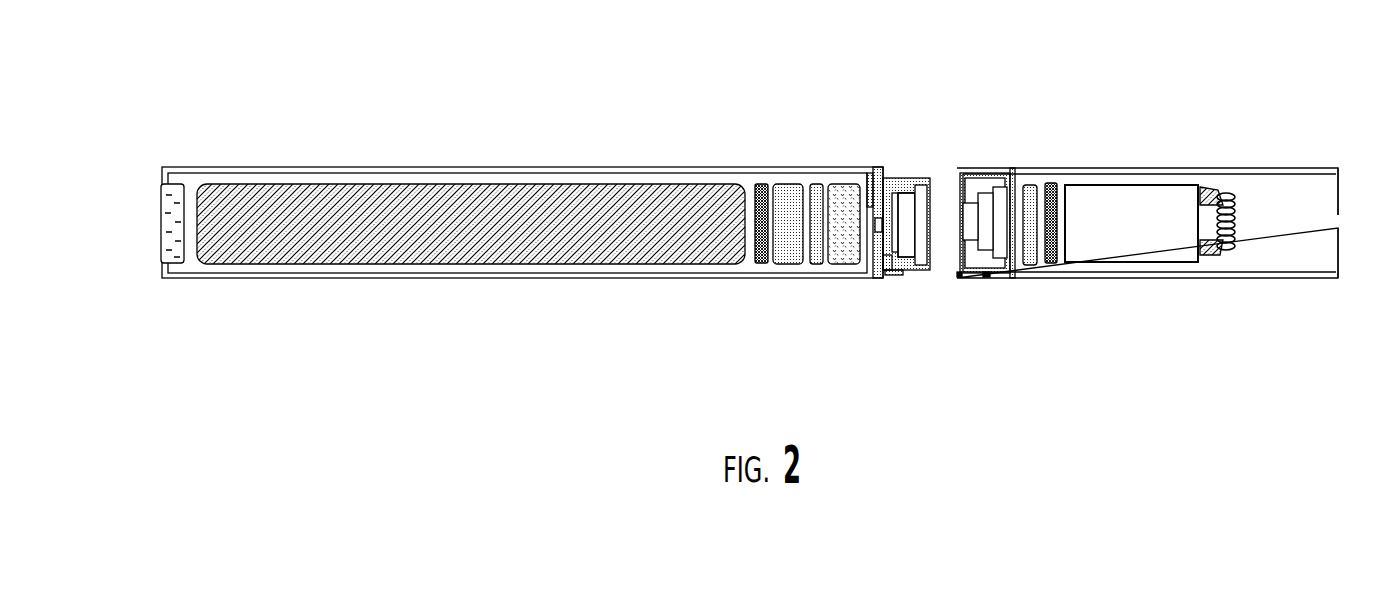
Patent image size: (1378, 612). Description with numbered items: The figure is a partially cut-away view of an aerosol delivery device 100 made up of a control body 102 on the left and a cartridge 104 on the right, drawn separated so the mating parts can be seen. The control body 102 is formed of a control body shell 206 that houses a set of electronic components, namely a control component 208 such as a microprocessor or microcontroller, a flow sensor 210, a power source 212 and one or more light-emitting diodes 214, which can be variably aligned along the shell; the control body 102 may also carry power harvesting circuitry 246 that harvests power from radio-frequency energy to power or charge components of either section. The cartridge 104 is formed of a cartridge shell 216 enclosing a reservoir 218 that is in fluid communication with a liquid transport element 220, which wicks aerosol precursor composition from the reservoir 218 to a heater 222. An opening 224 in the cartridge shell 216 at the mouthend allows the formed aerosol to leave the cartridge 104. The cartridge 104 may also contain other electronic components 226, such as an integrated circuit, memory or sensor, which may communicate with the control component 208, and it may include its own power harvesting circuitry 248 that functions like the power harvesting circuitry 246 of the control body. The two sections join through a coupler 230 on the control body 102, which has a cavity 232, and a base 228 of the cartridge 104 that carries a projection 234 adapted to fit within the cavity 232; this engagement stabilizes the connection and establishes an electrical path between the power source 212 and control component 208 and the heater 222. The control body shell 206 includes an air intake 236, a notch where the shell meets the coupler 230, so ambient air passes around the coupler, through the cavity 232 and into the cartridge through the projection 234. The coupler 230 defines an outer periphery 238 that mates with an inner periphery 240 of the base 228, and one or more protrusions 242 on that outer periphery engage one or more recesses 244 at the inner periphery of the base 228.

The aerosol delivery device 100 is at (245, 49).
The control body 102 is at (427, 121).
The cartridge 104 is at (1150, 124).
The control body shell 206 is at (297, 278).
The control component 208 is at (790, 264).
The flow sensor 210 is at (847, 264).
The power source 212 is at (445, 265).
The light-emitting diode 214 is at (173, 264).
The cartridge shell 216 is at (1105, 278).
The reservoir 218 is at (1145, 263).
The liquid transport element 220 is at (1213, 259).
The heater 222 is at (1233, 249).
The opening 224 is at (1337, 215).
The electronic components 226 is at (1028, 266).
The base 228 is at (1008, 278).
The coupler 230 is at (910, 271).
The cavity 232 is at (903, 179).
The projection 234 is at (985, 186).
The air intake 236 is at (871, 181).
The outer periphery 238 is at (917, 184).
The inner periphery 240 is at (977, 186).
The protrusion 242 is at (892, 276).
The recess 244 is at (975, 278).
The power harvesting circuitry 246 is at (760, 183).
The power harvesting circuitry 248 is at (1050, 182).